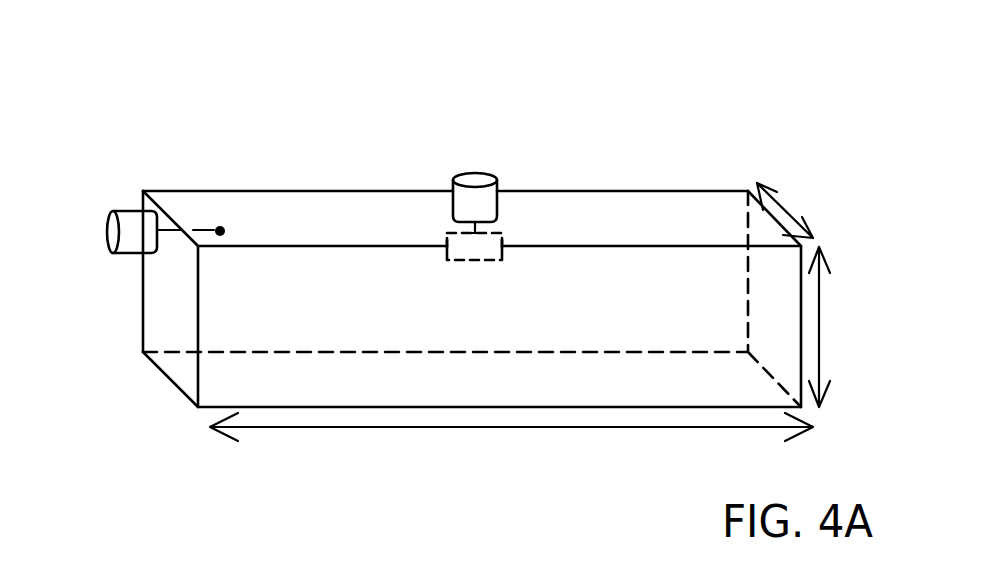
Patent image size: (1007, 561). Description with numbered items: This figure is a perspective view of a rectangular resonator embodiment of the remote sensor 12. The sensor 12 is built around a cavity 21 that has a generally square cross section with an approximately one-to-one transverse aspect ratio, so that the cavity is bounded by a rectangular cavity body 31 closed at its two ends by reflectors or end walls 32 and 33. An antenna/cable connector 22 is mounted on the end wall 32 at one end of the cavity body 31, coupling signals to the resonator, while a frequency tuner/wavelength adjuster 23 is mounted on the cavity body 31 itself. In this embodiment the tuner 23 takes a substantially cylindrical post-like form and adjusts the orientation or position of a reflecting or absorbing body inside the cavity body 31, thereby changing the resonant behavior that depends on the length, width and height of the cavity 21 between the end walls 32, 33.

The sensor 12 is at (97, 53).
The cavity 21 is at (348, 163).
The antenna/cable connector 22 is at (132, 220).
The frequency tuner/wavelength adjuster 23 is at (476, 182).
The cavity body 31 is at (641, 191).
The reflector/end wall 32 is at (152, 322).
The reflector/end wall 33 is at (853, 276).